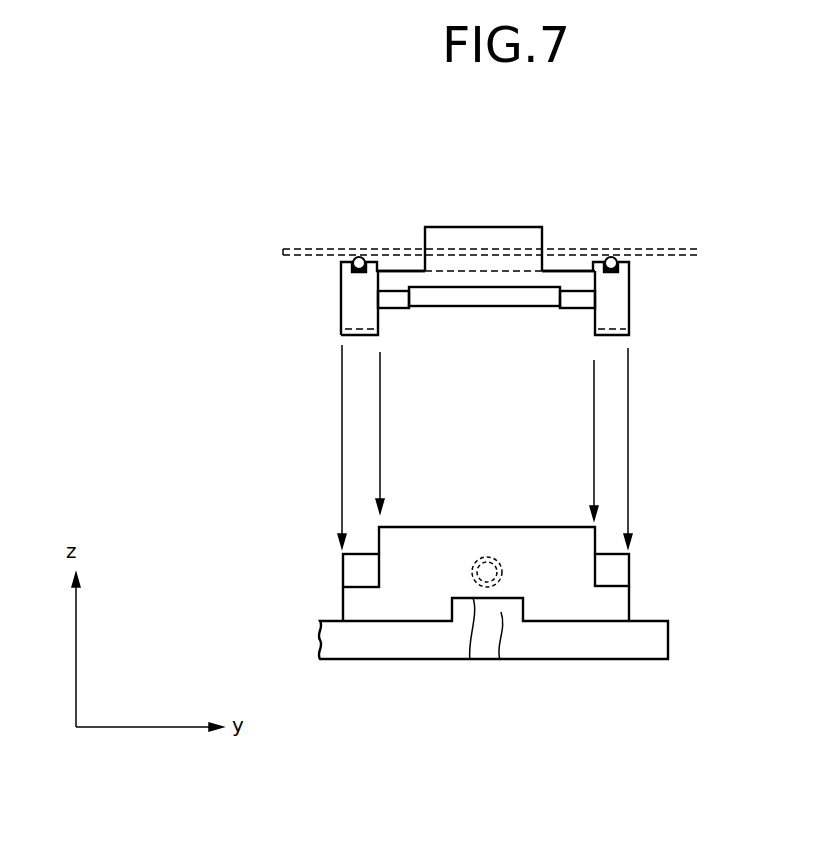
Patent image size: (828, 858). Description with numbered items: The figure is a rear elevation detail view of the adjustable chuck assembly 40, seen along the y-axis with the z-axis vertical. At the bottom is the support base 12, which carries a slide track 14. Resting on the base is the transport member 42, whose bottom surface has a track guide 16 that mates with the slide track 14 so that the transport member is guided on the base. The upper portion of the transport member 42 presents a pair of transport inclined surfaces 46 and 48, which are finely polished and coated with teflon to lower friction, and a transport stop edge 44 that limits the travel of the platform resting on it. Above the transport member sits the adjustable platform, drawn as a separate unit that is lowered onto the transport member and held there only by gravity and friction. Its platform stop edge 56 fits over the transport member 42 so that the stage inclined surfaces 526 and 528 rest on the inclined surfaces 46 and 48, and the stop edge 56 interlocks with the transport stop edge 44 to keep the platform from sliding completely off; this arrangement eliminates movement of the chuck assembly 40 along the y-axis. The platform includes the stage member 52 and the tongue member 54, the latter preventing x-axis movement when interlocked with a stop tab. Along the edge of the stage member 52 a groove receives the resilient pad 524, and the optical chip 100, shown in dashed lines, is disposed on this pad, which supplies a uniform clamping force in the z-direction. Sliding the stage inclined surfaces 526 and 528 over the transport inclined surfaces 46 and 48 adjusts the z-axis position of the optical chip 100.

The support base 12 is at (583, 645).
The slide track 14 is at (500, 660).
The track guide 16 is at (470, 660).
The adjustable chuck assembly 40 is at (573, 138).
The transport member 42 is at (412, 592).
The transport stop edge 44 is at (362, 568).
The transport inclined surface 46 is at (363, 553).
The transport inclined surface 48 is at (482, 528).
The stage member 52 is at (394, 270).
The tongue member 54 is at (485, 238).
The platform stop edge 56 is at (620, 316).
The optical chip 100 is at (358, 256).
The resilient pad 524 is at (614, 258).
The stage inclined surface 526 is at (615, 336).
The stage inclined surface 528 is at (583, 300).